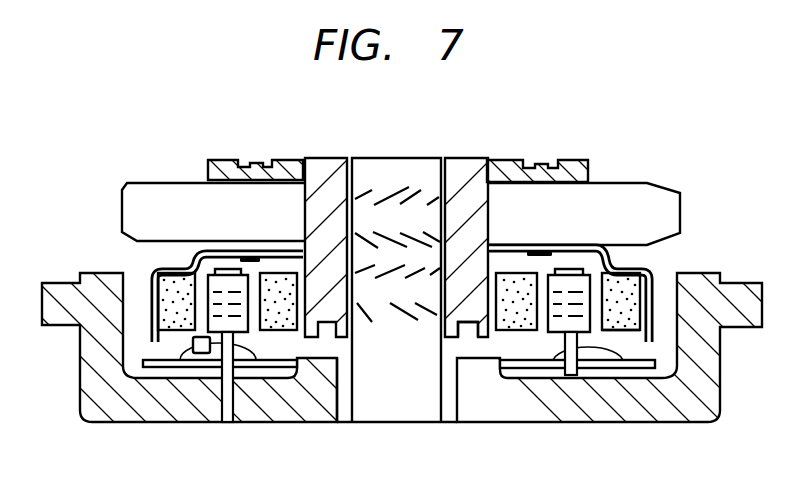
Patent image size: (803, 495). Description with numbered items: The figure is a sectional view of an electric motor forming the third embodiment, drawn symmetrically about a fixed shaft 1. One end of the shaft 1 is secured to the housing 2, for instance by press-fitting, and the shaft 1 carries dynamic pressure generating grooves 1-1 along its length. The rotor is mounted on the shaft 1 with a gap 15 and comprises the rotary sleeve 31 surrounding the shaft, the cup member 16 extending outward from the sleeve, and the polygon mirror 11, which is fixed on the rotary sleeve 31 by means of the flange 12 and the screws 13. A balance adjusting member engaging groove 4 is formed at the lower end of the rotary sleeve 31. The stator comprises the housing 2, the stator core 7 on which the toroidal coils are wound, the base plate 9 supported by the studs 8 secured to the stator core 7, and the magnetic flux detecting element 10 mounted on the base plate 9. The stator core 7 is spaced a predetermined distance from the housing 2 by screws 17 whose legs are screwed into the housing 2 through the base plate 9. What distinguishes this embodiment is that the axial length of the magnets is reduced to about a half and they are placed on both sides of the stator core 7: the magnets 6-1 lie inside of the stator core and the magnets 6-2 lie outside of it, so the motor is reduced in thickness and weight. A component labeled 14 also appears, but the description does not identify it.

The shaft 1 is at (398, 167).
The dynamic pressure generating grooves 1-1 is at (396, 318).
The housing 2 is at (710, 363).
The balance adjusting member engaging groove 4 is at (469, 333).
The magnets 6-1 is at (523, 333).
The magnets 6-2 is at (687, 423).
The stator core 7 is at (640, 337).
The studs 8 is at (593, 333).
The base plate 9 is at (155, 372).
The magnetic flux detecting element 10 is at (178, 345).
The polygon mirror 11 is at (662, 217).
The flange 12 is at (590, 173).
The screws 13 is at (550, 160).
The slot 14 is at (342, 420).
The gap 15 is at (442, 154).
The cup member 16 is at (160, 273).
The screws 17 is at (250, 370).
The rotary sleeve 31 is at (322, 162).